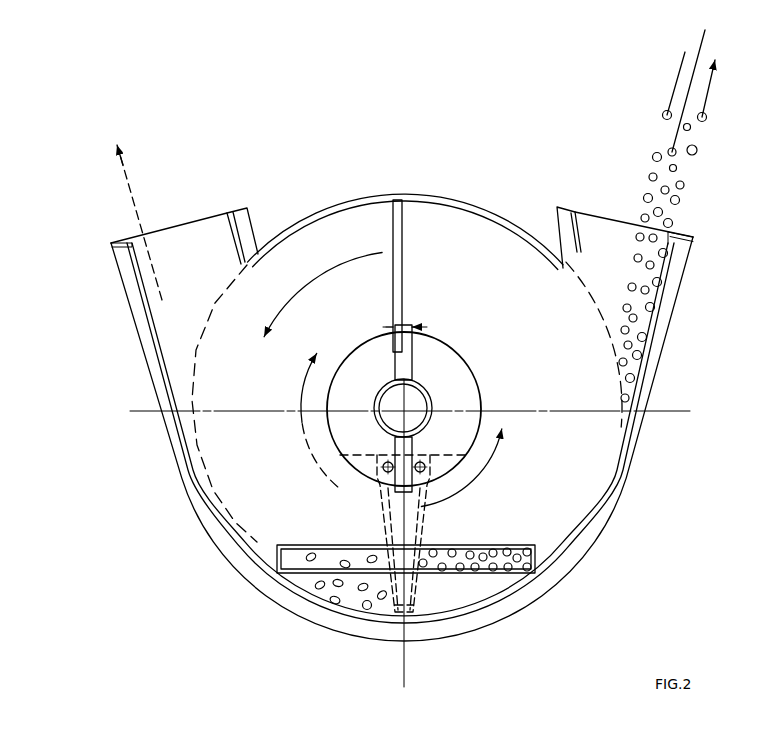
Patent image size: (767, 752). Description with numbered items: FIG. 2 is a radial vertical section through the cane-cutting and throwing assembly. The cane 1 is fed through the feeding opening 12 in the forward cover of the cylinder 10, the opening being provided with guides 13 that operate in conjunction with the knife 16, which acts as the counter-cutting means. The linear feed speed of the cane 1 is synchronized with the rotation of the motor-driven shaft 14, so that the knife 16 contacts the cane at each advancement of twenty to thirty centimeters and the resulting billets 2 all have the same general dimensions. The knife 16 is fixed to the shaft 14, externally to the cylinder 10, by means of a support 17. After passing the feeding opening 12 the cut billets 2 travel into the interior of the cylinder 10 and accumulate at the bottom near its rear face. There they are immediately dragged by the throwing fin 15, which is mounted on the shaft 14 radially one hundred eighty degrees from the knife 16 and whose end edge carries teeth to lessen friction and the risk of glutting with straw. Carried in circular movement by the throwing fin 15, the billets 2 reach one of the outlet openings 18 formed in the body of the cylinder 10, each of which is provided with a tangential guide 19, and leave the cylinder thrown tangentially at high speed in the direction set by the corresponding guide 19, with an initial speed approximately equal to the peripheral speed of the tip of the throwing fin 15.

The cane 1 is at (493, 566).
The billets 2 is at (367, 609).
The cylinder 10 is at (600, 505).
The feeding opening 12 is at (325, 563).
The guides 13 is at (275, 557).
The shaft 14 is at (412, 398).
The throwing fin 15 is at (405, 233).
The knife 16 is at (396, 500).
The support 17 is at (375, 365).
The outlet openings 18 is at (215, 303).
The tangential guide 19 is at (145, 312).